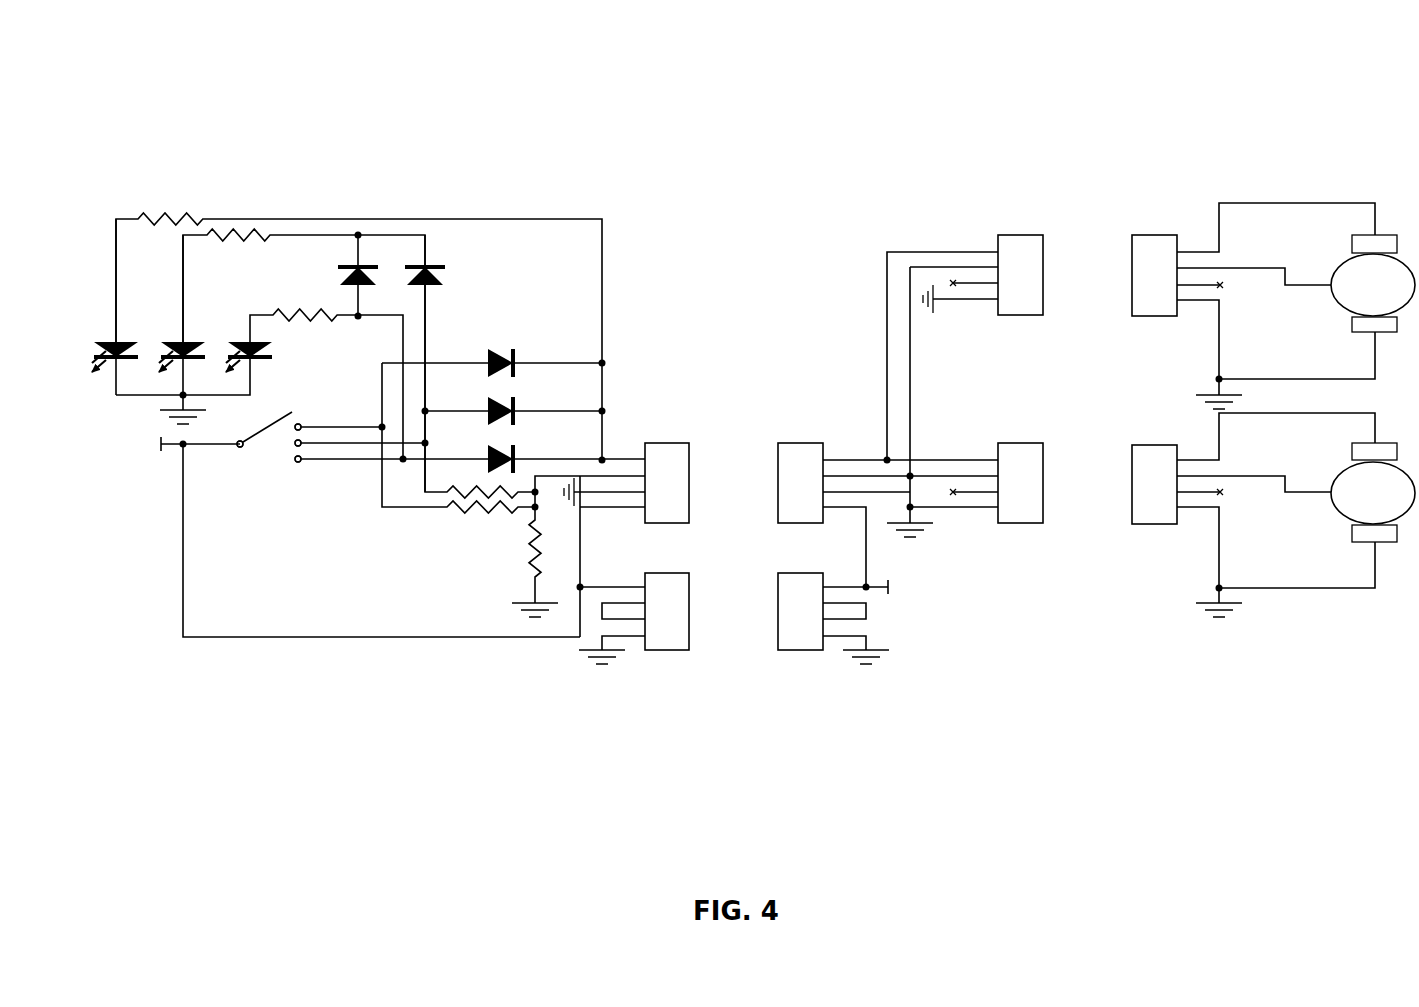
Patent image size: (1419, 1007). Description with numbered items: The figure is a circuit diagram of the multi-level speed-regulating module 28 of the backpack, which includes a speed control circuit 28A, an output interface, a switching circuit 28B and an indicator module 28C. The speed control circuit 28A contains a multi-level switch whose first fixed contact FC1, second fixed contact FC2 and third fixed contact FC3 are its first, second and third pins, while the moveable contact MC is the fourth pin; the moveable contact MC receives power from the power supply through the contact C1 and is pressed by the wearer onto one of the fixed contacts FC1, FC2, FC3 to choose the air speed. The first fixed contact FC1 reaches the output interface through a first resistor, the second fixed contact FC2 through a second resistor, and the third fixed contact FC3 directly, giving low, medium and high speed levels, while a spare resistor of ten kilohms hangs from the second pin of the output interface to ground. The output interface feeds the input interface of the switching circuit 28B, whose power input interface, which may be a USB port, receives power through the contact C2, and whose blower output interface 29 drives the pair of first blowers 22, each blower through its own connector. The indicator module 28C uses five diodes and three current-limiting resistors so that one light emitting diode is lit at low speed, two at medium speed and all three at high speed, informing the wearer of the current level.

The multi-level speed-regulating module 28 is at (287, 103).
The speed control circuit 28A is at (700, 423).
The switching circuit 28B is at (850, 218).
The indicator module 28C is at (627, 293).
The blower output interface 29 is at (1018, 188).
The first blowers 22 is at (1375, 180).
The contact C1 is at (160, 447).
The moveable contact MC is at (237, 446).
The first fixed contact FC1 is at (298, 424).
The second fixed contact FC2 is at (296, 446).
The third fixed contact FC3 is at (300, 462).
The contact C2 is at (890, 592).